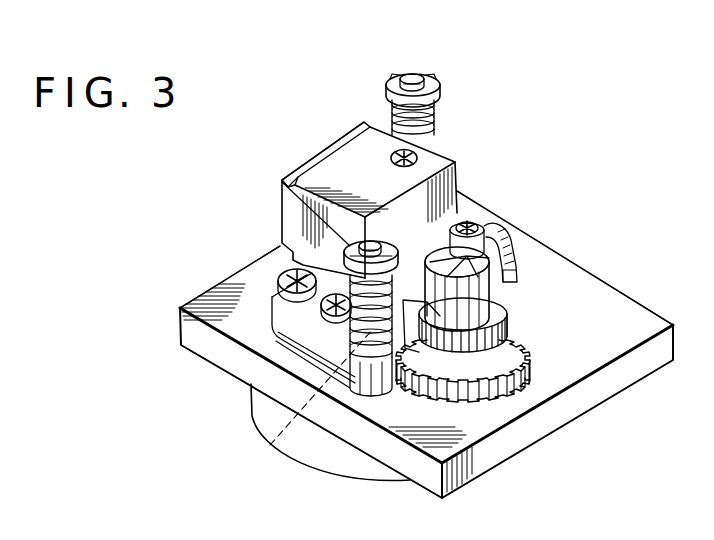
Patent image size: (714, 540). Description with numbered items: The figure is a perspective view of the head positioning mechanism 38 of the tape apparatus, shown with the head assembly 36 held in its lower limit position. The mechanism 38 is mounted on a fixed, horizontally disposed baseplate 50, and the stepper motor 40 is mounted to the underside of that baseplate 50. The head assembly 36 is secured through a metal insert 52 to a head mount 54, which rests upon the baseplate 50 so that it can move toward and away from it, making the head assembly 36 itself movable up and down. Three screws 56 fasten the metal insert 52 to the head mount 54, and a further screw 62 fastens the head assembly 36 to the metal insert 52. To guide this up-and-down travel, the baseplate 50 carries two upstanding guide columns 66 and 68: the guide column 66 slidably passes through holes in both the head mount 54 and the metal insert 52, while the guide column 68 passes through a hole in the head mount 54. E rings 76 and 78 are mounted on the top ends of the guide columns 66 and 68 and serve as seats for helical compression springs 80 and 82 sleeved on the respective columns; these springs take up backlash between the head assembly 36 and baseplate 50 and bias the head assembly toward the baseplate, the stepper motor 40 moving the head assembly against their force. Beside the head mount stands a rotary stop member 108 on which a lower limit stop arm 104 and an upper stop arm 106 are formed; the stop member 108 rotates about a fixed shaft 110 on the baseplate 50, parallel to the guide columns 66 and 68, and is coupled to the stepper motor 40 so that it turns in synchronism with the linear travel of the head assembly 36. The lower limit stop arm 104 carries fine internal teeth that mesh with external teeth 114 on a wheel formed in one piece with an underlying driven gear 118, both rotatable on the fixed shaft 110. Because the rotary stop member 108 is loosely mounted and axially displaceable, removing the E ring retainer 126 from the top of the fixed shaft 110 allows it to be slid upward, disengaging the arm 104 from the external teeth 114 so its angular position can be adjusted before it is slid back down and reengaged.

The head assembly 36 is at (341, 153).
The head positioning mechanism 38 is at (566, 114).
The stepper motor 40 is at (252, 420).
The baseplate 50 is at (603, 283).
The metal insert 52 is at (282, 270).
The head mount 54 is at (280, 320).
The screws 56 is at (287, 277).
The screw 62 is at (412, 155).
The guide column 66 is at (374, 243).
The guide column 68 is at (410, 73).
The E ring 76 is at (282, 182).
The E ring 78 is at (428, 78).
The helical compression spring 80 is at (348, 338).
The helical compression spring 82 is at (435, 108).
The lower limit stop arm 104 is at (405, 316).
The upper stop arm 106 is at (507, 232).
The rotary stop member 108 is at (488, 306).
The fixed shaft 110 is at (485, 250).
The external teeth 114 is at (500, 344).
The driven gear 118 is at (500, 402).
The E ring retainer 126 is at (484, 265).